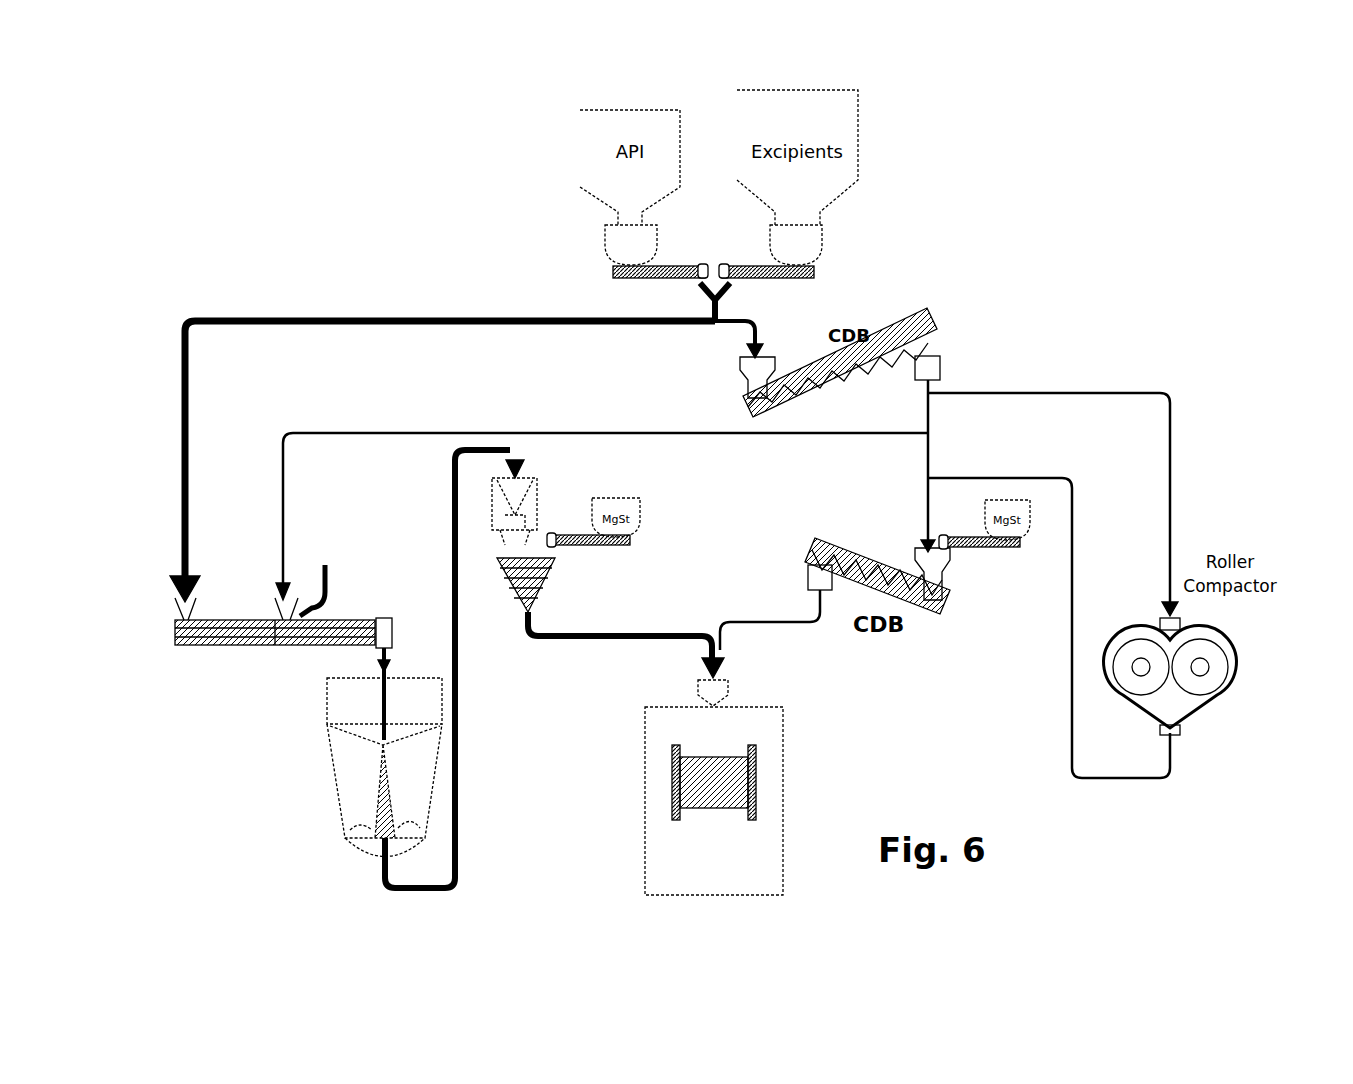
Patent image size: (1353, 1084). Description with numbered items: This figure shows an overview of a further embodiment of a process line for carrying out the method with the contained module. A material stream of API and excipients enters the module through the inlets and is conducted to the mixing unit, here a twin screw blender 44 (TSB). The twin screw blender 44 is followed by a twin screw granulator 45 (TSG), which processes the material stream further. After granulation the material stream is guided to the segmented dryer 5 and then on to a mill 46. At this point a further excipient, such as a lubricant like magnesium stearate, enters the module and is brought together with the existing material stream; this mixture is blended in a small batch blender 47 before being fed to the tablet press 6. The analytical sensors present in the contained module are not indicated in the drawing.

The twin screw blender 44 is at (213, 637).
The twin screw granulator 45 is at (345, 626).
The segmented dryer 5 is at (352, 797).
The mill 46 is at (565, 497).
The small batch blender 47 is at (503, 597).
The tablet press 6 is at (767, 743).